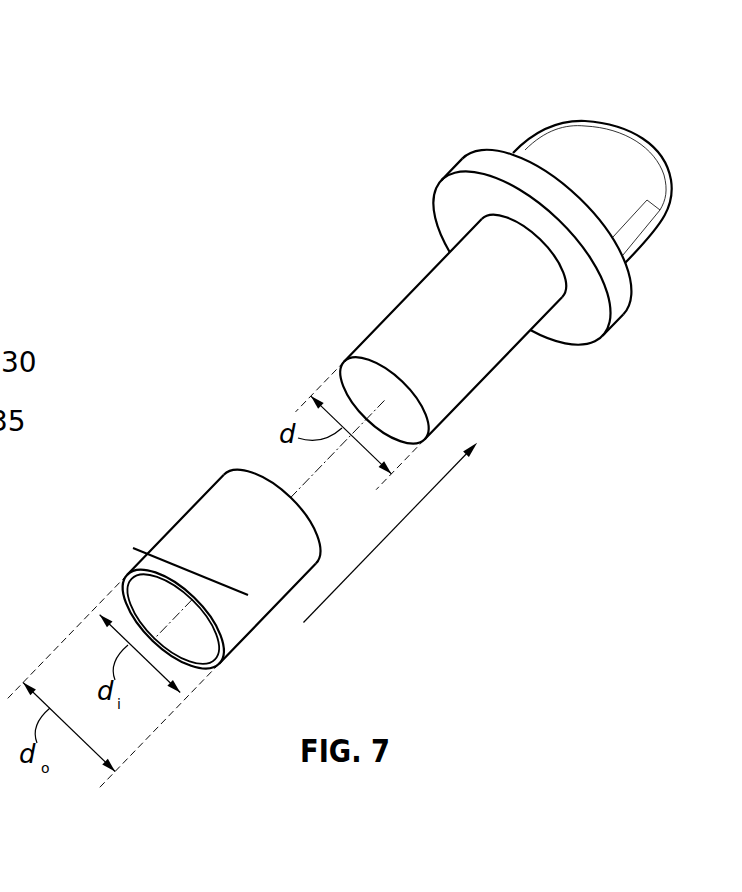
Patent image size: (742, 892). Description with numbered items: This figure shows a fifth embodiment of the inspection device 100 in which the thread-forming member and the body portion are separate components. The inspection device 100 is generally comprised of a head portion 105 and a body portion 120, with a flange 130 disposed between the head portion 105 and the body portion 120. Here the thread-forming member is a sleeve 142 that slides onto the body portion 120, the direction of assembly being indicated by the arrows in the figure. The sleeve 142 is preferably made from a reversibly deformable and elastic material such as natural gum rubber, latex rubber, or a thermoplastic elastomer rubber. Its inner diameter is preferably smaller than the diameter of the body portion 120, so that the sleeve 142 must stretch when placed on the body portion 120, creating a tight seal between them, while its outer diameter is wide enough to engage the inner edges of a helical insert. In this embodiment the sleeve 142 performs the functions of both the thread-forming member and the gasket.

The inspection device 100 is at (287, 227).
The head portion 105 is at (570, 138).
The body portion 120 is at (425, 298).
The flange 130 is at (470, 162).
The sleeve 142 is at (203, 503).